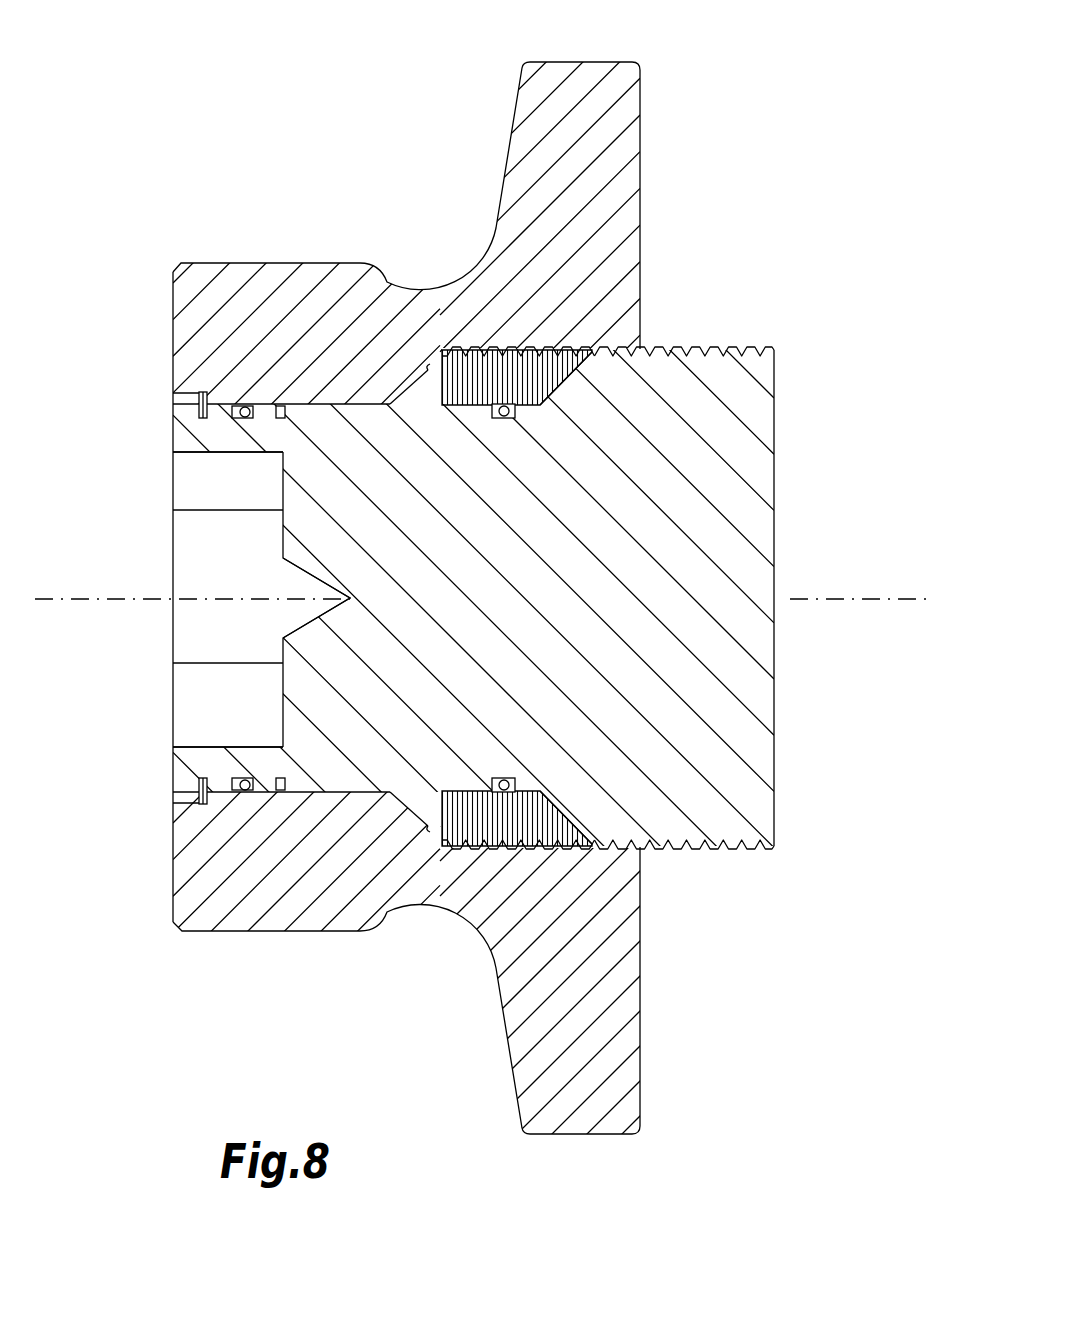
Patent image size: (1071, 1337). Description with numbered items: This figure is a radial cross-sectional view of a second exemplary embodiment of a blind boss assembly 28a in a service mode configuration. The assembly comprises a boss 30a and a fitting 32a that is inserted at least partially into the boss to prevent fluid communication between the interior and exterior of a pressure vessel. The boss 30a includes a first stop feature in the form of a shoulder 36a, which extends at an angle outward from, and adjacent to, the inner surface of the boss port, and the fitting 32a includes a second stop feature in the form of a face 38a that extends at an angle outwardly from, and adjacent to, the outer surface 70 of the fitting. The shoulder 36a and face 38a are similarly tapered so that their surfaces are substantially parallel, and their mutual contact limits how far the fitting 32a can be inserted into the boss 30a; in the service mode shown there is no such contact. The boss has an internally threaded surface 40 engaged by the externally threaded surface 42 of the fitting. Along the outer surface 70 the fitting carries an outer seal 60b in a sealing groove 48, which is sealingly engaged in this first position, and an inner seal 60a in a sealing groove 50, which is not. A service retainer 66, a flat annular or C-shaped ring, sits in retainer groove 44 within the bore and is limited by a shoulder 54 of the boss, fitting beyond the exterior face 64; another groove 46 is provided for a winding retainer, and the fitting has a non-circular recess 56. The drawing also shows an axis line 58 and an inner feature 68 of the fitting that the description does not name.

The blind boss assembly 28a is at (474, 668).
The boss 30a is at (505, 127).
The fitting 32a is at (790, 468).
The shoulder 36a is at (433, 363).
The face 38a is at (566, 378).
The internally threaded surface 40 is at (488, 825).
The externally threaded surface 42 is at (683, 346).
The retainer groove 44 is at (199, 415).
The groove 46 is at (280, 420).
The sealing groove 48 is at (233, 418).
The sealing groove 50 is at (515, 413).
The shoulder 54 is at (206, 400).
The non-circular recess 56 is at (235, 561).
The central axis 58 is at (96, 599).
The inner seal 60a is at (492, 414).
The outer seal 60b is at (278, 404).
The exterior face 64 is at (173, 310).
The service retainer 66 is at (199, 397).
The conical recess 68 is at (310, 583).
The outer surface 70 is at (403, 406).